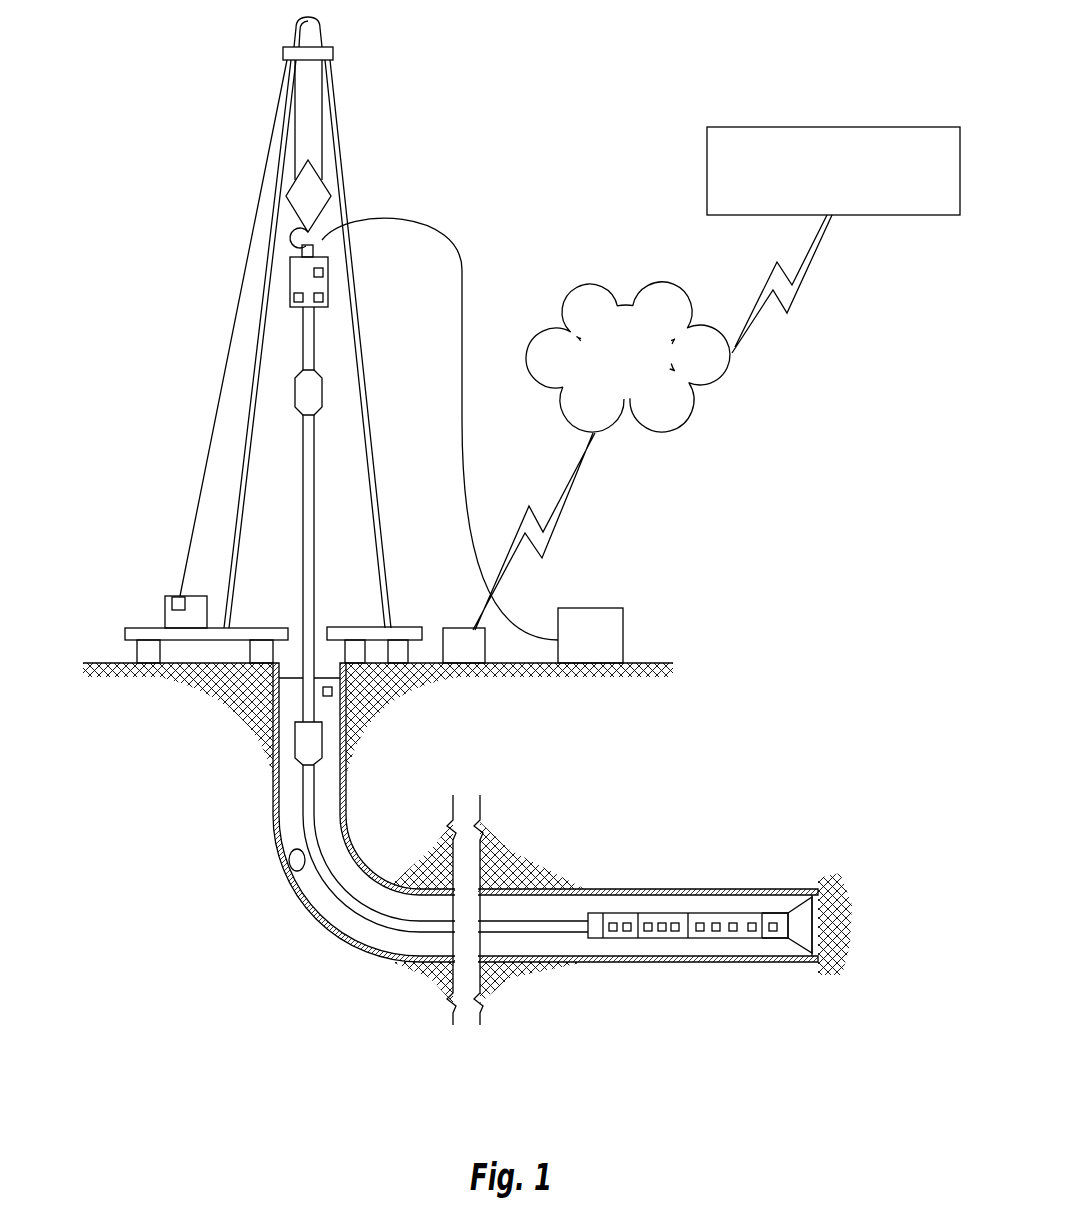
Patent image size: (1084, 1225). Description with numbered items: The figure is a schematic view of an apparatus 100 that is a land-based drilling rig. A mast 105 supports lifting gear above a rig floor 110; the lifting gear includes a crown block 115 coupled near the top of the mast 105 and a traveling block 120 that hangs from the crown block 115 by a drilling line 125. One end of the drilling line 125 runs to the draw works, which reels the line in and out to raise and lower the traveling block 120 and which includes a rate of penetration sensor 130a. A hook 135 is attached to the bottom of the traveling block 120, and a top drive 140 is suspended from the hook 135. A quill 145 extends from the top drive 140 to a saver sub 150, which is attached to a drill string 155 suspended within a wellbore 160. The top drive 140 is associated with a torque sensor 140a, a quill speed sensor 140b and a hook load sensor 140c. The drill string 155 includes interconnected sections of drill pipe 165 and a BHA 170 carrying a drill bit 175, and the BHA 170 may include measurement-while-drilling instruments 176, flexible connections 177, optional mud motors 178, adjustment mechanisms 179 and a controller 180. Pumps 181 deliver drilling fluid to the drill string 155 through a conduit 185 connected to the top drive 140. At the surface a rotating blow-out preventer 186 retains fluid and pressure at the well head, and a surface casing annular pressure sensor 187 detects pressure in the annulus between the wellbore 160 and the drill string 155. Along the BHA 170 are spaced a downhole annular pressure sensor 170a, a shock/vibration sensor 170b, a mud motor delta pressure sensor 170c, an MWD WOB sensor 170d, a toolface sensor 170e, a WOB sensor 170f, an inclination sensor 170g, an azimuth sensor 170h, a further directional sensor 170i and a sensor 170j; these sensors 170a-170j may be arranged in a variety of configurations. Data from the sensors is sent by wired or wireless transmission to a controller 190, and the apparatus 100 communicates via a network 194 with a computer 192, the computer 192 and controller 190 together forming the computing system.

The apparatus 100 is at (659, 114).
The mast 105 is at (343, 116).
The rig floor 110 is at (125, 634).
The crown block 115 is at (322, 31).
The traveling block 120 is at (326, 185).
The drilling line 125 is at (293, 122).
The rate of penetration sensor 130a is at (172, 598).
The hook 135 is at (292, 237).
The top drive 140 is at (290, 276).
The torque sensor 140a is at (294, 297).
The speed sensor 140b is at (323, 272).
The hook load sensor 140c is at (323, 297).
The quill 145 is at (303, 332).
The saver sub 150 is at (295, 398).
The drill string 155 is at (293, 474).
The wellbore 160 is at (290, 861).
The drill pipe 165 is at (303, 596).
The BHA 170 is at (717, 926).
The downhole annular pressure sensor 170a is at (613, 935).
The shock/vibration sensor 170b is at (627, 935).
The mud motor delta pressure sensor 170c is at (648, 920).
The MWD WOB sensor 170d is at (662, 935).
The toolface sensor 170e is at (675, 935).
The WOB sensor 170f is at (700, 920).
The inclination sensor 170g is at (716, 920).
The azimuth sensor 170h is at (733, 920).
The directional sensor 170i is at (752, 935).
The sensor 170j is at (773, 935).
The drill bit 175 is at (800, 913).
The measurement-while-drilling instruments 176 is at (610, 899).
The flexible connections 177 is at (662, 913).
The motors 178 is at (713, 935).
The adjustment mechanisms 179 is at (785, 940).
The controller 180 is at (586, 914).
The pumps 181 is at (592, 608).
The conduit 185 is at (465, 452).
The rotating blow-out preventer 186 is at (270, 677).
The surface casing annular pressure sensor 187 is at (333, 691).
The controller 190 is at (457, 628).
The computer 192 is at (820, 199).
The network 194 is at (617, 390).